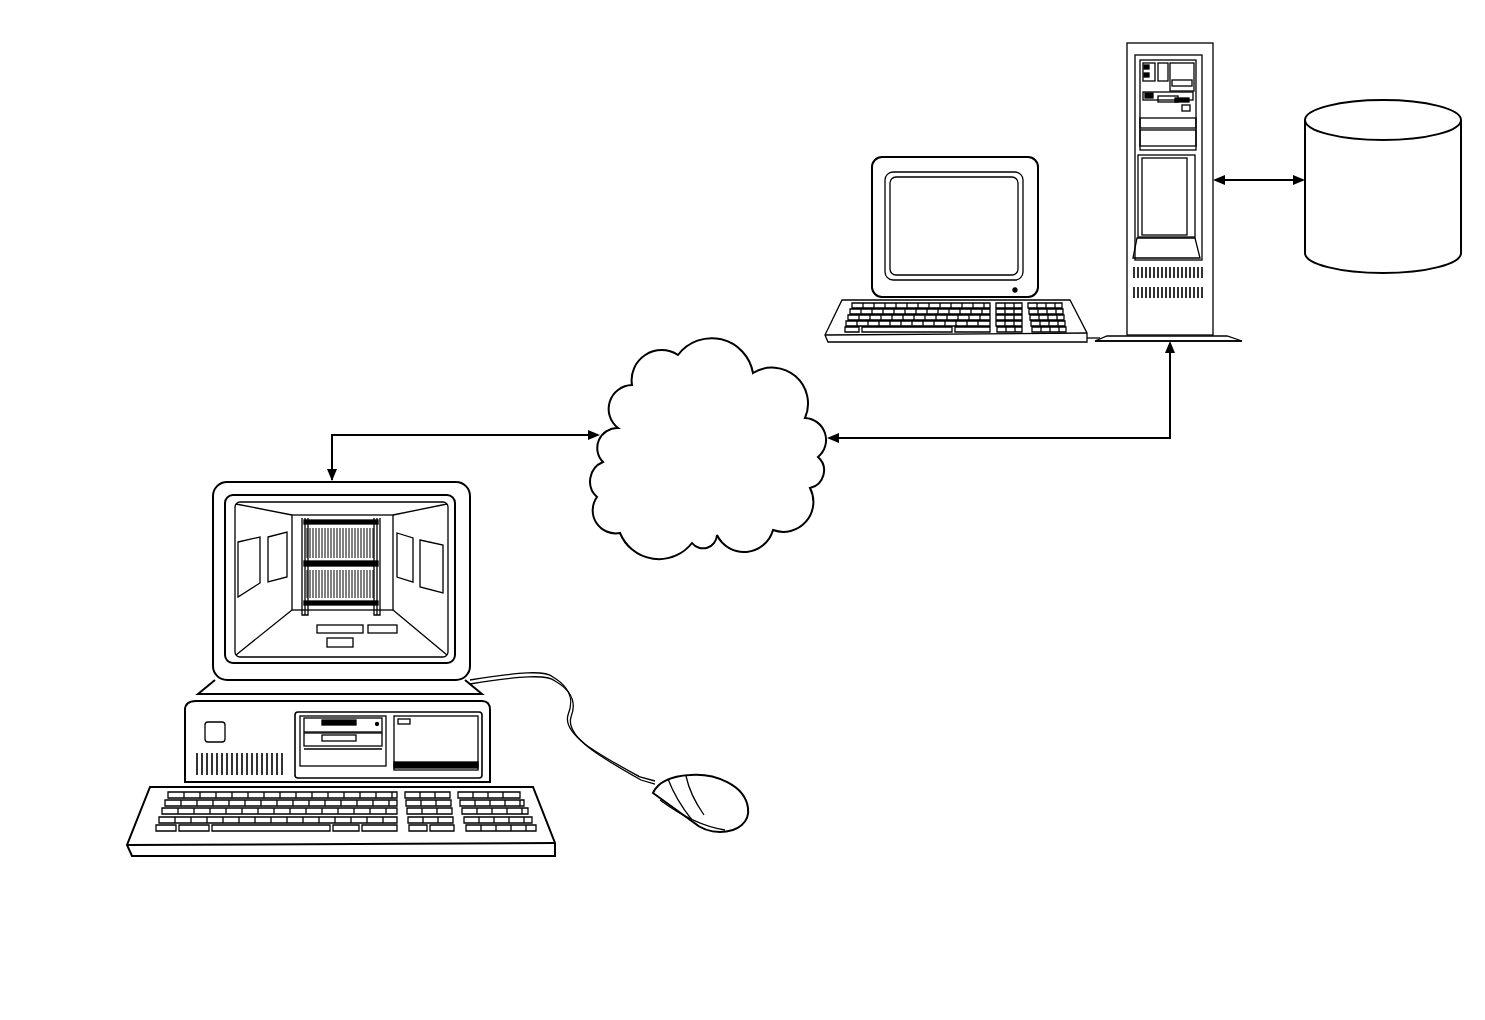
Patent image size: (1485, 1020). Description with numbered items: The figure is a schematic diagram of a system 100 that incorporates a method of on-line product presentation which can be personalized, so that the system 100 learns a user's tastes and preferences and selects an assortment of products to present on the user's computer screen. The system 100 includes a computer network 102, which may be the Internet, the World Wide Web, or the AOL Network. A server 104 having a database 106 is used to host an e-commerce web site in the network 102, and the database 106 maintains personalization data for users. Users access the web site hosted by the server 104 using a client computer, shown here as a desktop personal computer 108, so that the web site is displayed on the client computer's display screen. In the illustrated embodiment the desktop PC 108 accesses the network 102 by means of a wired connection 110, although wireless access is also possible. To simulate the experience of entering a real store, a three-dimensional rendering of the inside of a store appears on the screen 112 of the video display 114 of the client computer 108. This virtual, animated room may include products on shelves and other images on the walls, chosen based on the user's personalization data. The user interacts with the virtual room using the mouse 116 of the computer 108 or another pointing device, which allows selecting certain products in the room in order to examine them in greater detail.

The system 100 is at (1270, 552).
The computer network 102 is at (717, 449).
The server 104 is at (1125, 102).
The database 106 is at (1380, 112).
The desktop personal computer 108 is at (484, 542).
The wired connection 110 is at (463, 433).
The screen 112 is at (377, 508).
The video display 114 is at (268, 480).
The mouse 116 is at (722, 788).